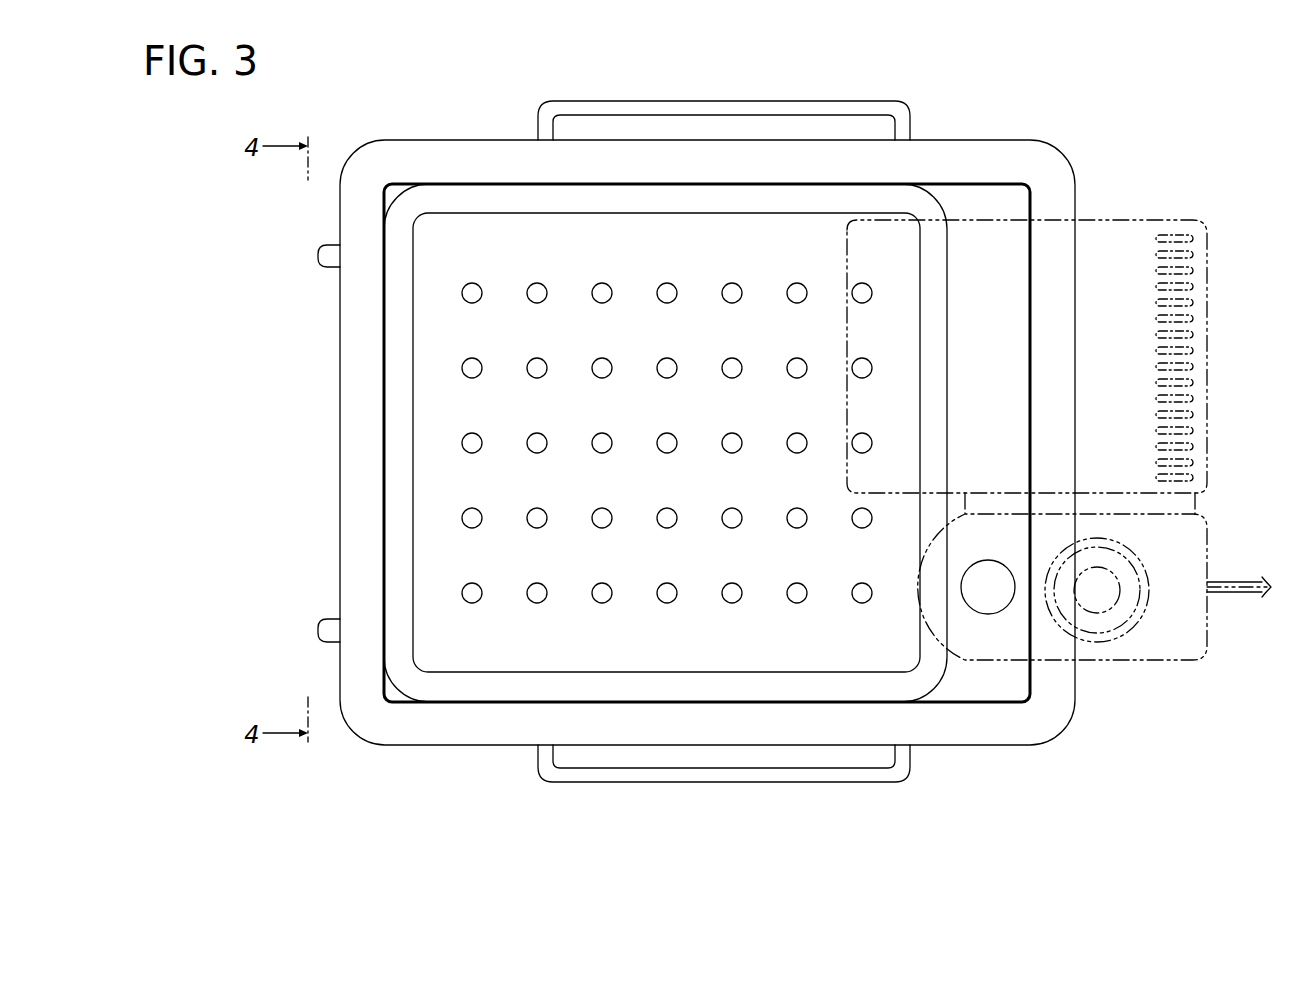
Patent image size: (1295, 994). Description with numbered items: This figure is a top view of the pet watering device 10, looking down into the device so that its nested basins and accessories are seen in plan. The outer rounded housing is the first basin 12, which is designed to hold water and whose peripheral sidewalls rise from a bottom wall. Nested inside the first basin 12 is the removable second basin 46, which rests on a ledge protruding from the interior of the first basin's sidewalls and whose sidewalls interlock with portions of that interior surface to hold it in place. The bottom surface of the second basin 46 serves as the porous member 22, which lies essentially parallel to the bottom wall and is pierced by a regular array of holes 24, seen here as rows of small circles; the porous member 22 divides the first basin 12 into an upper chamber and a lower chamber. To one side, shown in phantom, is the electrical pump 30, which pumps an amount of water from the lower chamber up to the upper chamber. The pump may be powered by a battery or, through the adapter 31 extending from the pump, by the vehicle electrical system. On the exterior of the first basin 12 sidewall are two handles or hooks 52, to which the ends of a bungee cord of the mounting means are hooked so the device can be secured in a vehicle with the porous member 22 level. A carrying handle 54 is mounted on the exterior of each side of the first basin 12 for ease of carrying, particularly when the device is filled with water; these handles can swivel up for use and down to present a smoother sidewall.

The pet watering device 10 is at (1079, 130).
The first basin 12 is at (339, 426).
The porous member 22 is at (502, 260).
The holes 24 is at (604, 292).
The electrical pump 30 is at (1180, 630).
The adapter 31 is at (1238, 581).
The second basin 46 is at (866, 682).
The handles or hooks 52 is at (318, 256).
The carrying handle 54 is at (655, 100).